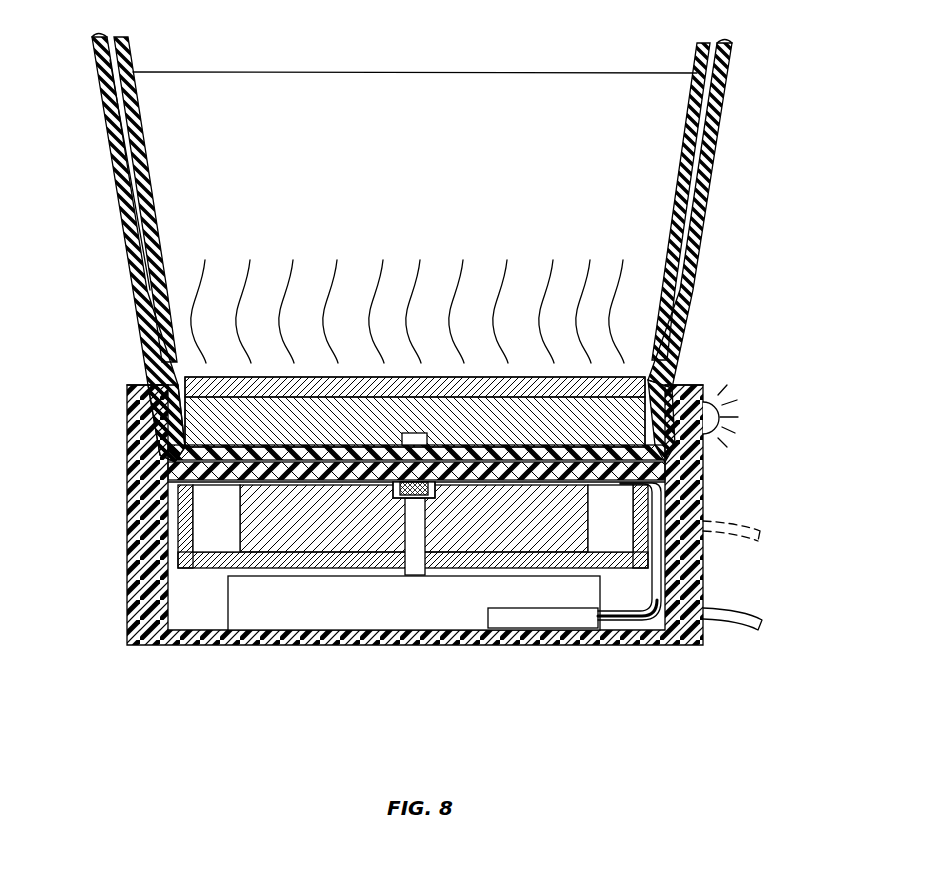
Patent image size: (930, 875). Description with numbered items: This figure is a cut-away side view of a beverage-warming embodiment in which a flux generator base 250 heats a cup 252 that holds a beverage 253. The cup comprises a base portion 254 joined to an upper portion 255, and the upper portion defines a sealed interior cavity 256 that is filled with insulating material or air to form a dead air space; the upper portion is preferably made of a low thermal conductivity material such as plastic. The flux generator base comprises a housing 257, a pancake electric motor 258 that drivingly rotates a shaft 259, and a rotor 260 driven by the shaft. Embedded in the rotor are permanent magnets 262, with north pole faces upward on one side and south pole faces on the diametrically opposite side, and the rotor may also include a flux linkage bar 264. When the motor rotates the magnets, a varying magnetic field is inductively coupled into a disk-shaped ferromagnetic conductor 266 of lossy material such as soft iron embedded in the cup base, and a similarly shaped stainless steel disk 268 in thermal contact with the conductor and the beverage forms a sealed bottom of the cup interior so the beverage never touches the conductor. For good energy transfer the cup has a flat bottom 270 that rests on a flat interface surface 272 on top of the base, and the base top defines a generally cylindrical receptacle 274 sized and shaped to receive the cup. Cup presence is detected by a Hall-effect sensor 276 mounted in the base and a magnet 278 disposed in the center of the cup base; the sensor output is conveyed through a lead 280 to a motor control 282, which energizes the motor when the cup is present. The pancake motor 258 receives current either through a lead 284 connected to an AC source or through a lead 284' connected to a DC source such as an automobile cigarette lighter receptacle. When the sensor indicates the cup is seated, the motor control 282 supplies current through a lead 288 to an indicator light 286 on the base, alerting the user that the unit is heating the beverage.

The flux generator base 250 is at (443, 482).
The cup 252 is at (126, 284).
The beverage 253 is at (338, 72).
The base portion 254 is at (158, 410).
The upper portion 255 is at (115, 157).
The sealed interior cavity 256 is at (117, 122).
The housing 257 is at (126, 600).
The pancake electric motor 258 is at (270, 617).
The shaft 259 is at (417, 566).
The rotor 260 is at (643, 530).
The permanent magnets 262 is at (200, 510).
The flux linkage bar 264 is at (223, 558).
The ferromagnetic conductor 266 is at (168, 405).
The stainless steel disk 268 is at (667, 377).
The flat bottom 270 is at (340, 448).
The flat interface surface 272 is at (140, 470).
The cylindrical receptacle 274 is at (672, 385).
The Hall-effect sensor 276 is at (397, 498).
The magnet 278 is at (422, 437).
The lead 280 is at (640, 597).
The motor control 282 is at (507, 622).
The lead 284 is at (732, 659).
The lead 284' is at (770, 525).
The indicator light 286 is at (720, 414).
The lead 288 is at (660, 612).